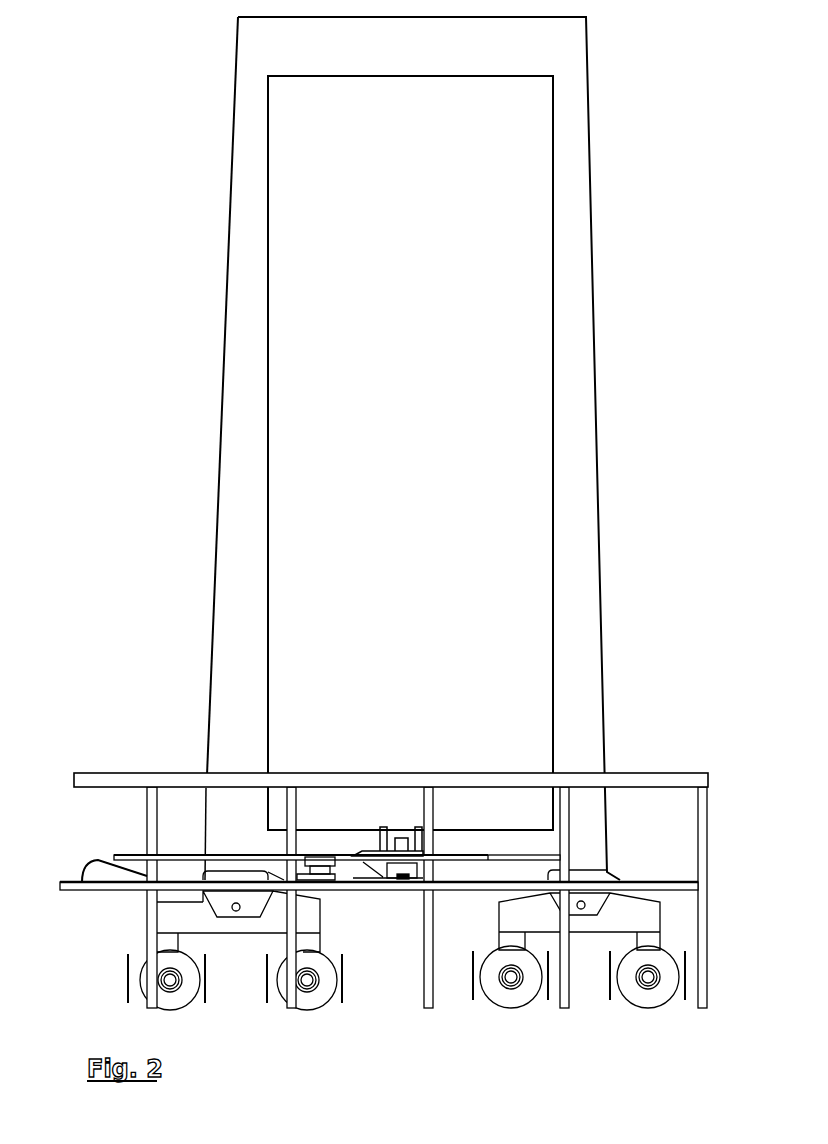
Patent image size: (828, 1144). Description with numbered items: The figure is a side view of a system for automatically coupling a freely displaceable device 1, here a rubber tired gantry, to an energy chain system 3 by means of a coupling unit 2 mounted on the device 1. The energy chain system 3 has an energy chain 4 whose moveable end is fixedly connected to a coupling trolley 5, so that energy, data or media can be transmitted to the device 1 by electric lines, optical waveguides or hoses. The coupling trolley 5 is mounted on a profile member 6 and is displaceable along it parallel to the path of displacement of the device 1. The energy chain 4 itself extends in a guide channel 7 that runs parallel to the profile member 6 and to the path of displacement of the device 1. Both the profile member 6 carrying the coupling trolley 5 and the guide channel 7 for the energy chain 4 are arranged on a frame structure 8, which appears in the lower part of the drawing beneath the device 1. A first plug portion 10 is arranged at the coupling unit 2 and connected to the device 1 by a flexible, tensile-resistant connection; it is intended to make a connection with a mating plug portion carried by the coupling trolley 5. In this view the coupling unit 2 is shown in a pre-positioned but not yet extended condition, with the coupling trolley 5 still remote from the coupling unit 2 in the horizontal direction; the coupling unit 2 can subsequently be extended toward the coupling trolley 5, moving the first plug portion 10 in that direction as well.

The freely displaceable device 1 is at (202, 592).
The coupling unit 2 is at (375, 832).
The energy chain system 3 is at (101, 848).
The energy chain 4 is at (82, 868).
The coupling trolley 5 is at (334, 876).
The profile member 6 is at (250, 857).
The guide channel 7 is at (108, 887).
The frame structure 8 is at (675, 768).
The first plug portion 10 is at (403, 880).